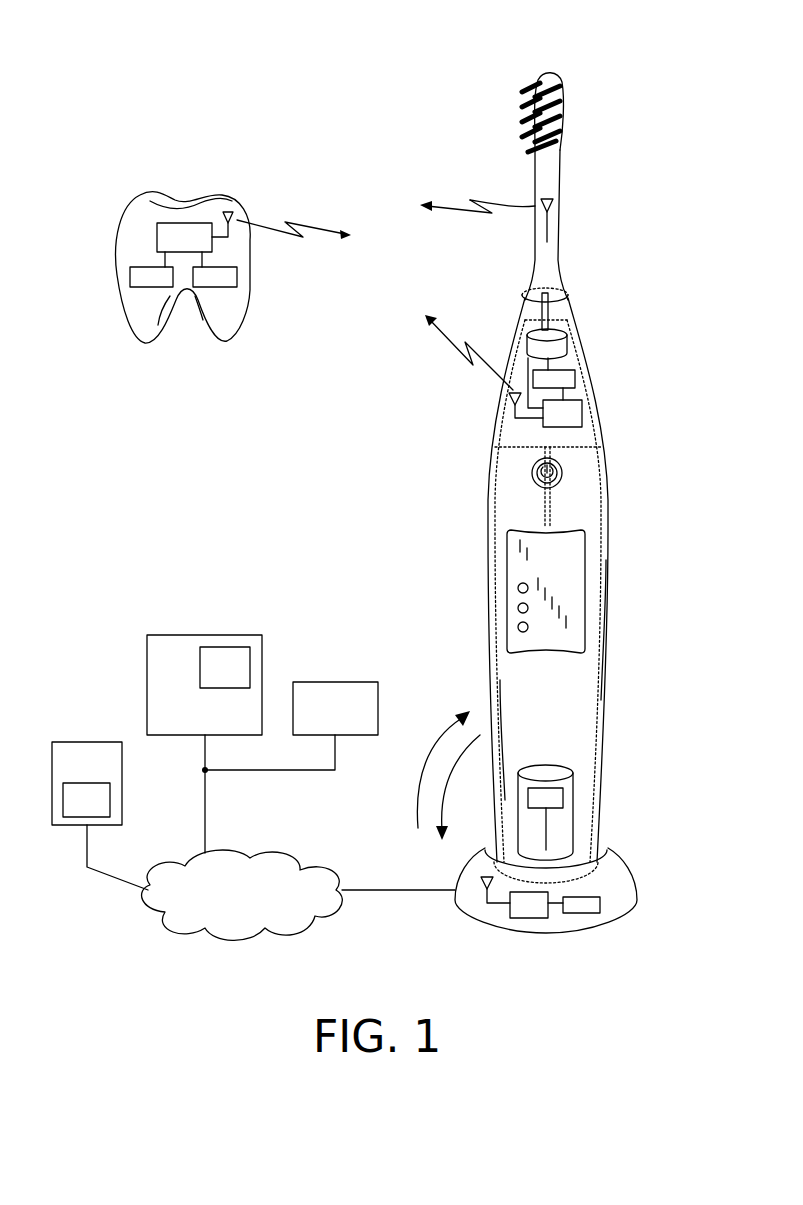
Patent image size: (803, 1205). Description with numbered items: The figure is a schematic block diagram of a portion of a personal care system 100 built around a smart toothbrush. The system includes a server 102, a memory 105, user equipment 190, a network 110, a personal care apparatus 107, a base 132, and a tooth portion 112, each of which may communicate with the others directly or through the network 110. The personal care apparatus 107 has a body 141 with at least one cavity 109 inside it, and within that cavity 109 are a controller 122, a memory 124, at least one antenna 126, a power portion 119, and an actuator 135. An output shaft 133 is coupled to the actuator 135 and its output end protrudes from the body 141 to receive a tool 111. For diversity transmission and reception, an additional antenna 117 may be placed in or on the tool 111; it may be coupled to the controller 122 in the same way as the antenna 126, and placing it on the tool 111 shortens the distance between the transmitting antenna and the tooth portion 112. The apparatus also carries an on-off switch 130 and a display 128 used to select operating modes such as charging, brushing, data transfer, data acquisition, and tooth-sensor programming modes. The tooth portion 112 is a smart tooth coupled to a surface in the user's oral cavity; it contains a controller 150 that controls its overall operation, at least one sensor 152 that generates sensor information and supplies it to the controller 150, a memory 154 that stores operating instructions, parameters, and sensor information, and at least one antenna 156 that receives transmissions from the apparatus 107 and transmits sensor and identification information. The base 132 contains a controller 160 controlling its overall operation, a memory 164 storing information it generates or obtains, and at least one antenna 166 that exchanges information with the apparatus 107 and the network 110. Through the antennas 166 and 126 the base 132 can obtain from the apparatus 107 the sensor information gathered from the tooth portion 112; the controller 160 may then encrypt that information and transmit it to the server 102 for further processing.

The personal care system 100 is at (97, 62).
The tool 111 is at (572, 78).
The antenna 117 is at (556, 205).
The tooth portion 112 is at (103, 188).
The antenna 156 is at (228, 211).
The controller 150 is at (157, 238).
The memory 154 is at (130, 277).
The sensor 152 is at (237, 277).
The output shaft 133 is at (540, 315).
The actuator 135 is at (569, 345).
The memory 124 is at (577, 380).
The antenna 126 is at (507, 398).
The controller 122 is at (584, 412).
The on-off switch 130 is at (532, 473).
The personal care apparatus 107 is at (625, 512).
The display 128 is at (507, 590).
The body 141 is at (609, 578).
The cavity 109 is at (576, 705).
The power portion 119 is at (565, 798).
The base 132 is at (637, 845).
The antenna 166 is at (480, 882).
The controller 160 is at (530, 918).
The memory 164 is at (583, 913).
The server 102 is at (205, 635).
The memory 105 is at (335, 682).
The user equipment 190 is at (87, 742).
The network 110 is at (283, 858).